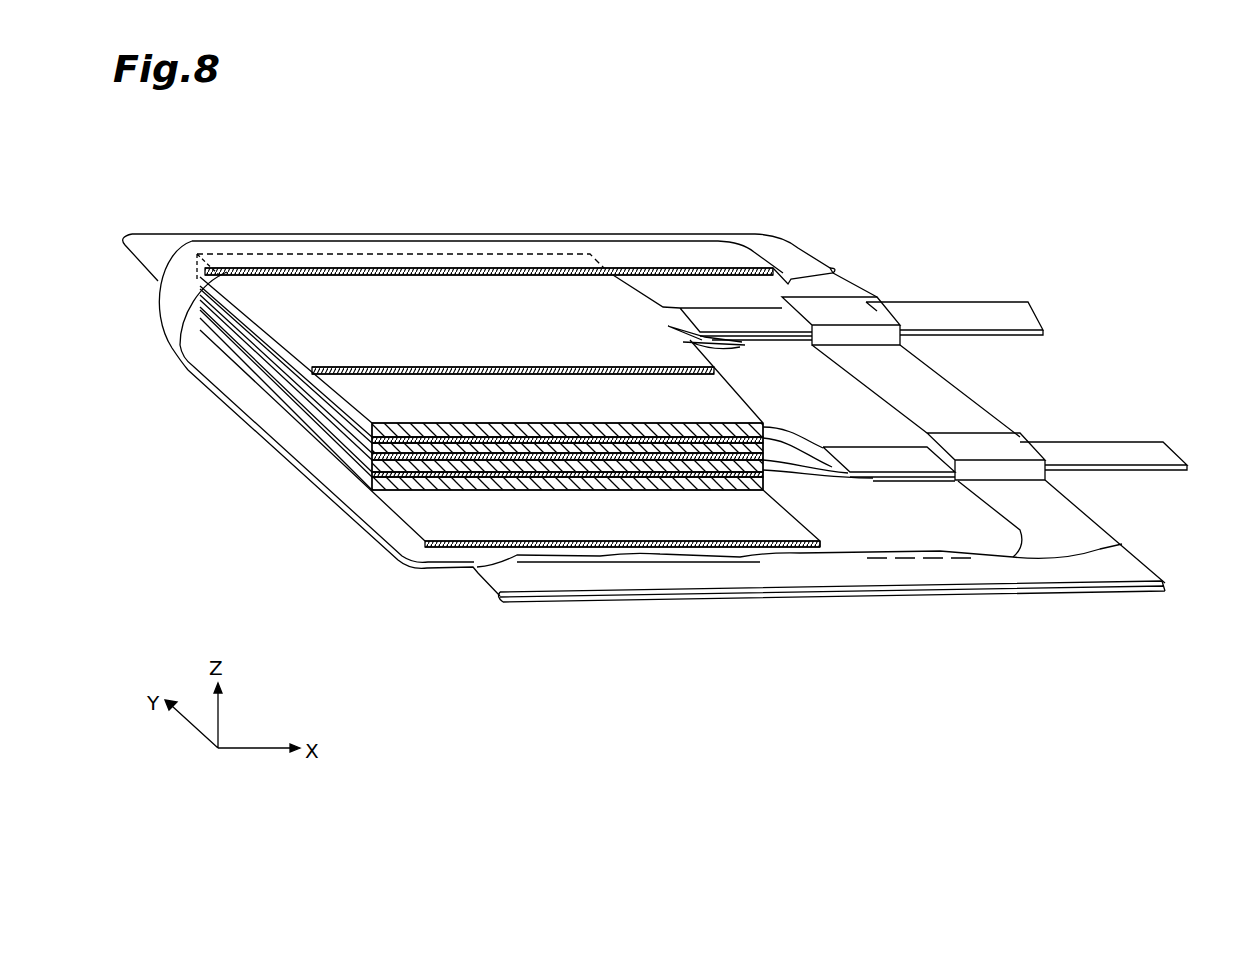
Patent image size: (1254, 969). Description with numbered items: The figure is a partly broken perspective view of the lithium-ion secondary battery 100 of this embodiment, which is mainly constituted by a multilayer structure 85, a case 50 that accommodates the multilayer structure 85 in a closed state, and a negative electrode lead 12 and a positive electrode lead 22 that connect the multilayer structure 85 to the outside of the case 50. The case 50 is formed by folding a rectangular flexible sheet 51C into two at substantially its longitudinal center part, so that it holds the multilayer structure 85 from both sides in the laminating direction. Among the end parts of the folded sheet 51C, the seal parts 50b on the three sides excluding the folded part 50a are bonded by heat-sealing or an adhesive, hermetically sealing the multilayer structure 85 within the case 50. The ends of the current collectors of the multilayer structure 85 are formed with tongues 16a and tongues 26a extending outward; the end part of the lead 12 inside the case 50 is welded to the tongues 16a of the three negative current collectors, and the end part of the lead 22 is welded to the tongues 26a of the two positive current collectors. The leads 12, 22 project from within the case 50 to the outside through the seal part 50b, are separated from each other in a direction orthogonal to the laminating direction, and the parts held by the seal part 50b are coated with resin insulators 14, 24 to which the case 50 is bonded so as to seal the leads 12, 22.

The lithium-ion secondary battery 100 is at (647, 96).
The case 50 is at (458, 233).
The folded part 50a is at (170, 292).
The seal part 50b is at (537, 240).
The rectangular flexible sheet 51C is at (617, 240).
The multilayer structure 85 is at (263, 362).
The tongues 16a is at (678, 320).
The insulator 14 is at (855, 305).
The negative electrode lead 12 is at (1035, 307).
The tongues 26a is at (795, 444).
The insulator 24 is at (1005, 437).
The positive electrode lead 22 is at (1175, 443).